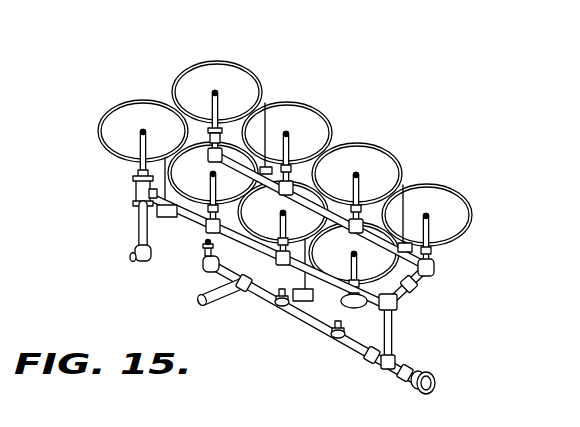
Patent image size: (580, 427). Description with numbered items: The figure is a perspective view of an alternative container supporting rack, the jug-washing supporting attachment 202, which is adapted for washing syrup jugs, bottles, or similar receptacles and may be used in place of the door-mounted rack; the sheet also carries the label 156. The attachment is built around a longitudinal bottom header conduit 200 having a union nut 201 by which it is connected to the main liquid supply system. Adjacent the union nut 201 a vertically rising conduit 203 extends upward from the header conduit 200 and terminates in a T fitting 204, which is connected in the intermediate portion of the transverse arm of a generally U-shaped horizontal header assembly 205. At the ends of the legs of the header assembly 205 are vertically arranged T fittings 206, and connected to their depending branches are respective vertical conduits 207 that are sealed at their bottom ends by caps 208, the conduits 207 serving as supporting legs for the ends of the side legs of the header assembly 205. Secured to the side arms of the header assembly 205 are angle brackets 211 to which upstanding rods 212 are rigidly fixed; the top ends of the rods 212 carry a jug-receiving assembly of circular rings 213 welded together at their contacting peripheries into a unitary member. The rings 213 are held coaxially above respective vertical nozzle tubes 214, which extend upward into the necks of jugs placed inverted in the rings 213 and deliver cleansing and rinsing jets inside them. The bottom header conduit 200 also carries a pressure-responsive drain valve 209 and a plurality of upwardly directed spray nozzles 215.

The planting tray assembly 156 is at (73, 11).
The header conduit 200 is at (357, 354).
The union nut 201 is at (423, 372).
The jug-washing supporting attachment 202 is at (311, 217).
The vertically rising conduit 203 is at (393, 329).
The T fitting 204 is at (429, 288).
The U-shaped horizontal header assembly 205 is at (186, 231).
The T fittings 206 is at (133, 192).
The vertical conduits 207 is at (137, 224).
The caps 208 is at (136, 260).
The pressure-responsive drain valve 209 is at (226, 297).
The angle brackets 211 is at (302, 306).
The upstanding rods 212 is at (314, 268).
The circular rings 213 is at (254, 73).
The vertical nozzle tubes 214 is at (221, 98).
The spray nozzles 215 is at (333, 333).